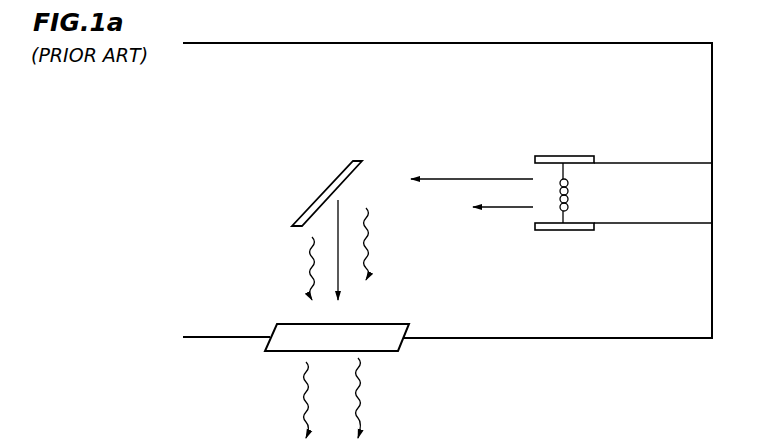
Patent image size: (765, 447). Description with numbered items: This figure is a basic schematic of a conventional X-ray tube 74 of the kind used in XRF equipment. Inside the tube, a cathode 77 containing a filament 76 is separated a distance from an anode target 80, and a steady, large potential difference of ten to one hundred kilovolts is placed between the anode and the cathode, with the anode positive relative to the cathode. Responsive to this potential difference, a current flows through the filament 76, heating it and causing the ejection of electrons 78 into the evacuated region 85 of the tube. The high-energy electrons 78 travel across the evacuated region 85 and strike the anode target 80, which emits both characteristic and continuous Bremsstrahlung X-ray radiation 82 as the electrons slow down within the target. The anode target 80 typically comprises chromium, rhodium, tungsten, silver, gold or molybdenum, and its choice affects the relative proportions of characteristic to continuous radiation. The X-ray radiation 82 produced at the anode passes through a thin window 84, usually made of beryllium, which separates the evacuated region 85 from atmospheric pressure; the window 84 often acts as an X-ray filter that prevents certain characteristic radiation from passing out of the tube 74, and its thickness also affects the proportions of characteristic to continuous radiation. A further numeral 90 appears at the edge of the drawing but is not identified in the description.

The X-ray tube 74 is at (362, 23).
The filament 76 is at (568, 200).
The cathode 77 is at (562, 155).
The electrons 78 is at (453, 179).
The anode target 80 is at (316, 203).
The X-ray radiation 82 is at (372, 222).
The window 84 is at (370, 362).
The evacuated region 85 is at (594, 331).
The substrate 90 is at (675, 443).